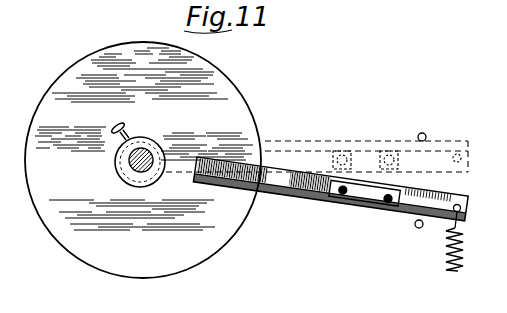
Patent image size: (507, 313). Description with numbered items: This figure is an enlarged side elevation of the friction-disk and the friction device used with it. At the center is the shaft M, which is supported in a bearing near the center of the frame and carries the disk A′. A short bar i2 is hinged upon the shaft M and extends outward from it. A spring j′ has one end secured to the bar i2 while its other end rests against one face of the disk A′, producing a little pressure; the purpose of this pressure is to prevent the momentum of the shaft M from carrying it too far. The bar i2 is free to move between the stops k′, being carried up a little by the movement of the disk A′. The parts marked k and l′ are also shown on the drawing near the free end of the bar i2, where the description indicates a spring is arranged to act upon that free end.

The disk A′ is at (143, 160).
The shaft M is at (136, 163).
The spring j′ is at (282, 233).
The pin k is at (415, 226).
The stops k′ is at (420, 133).
The short bar i2 is at (453, 208).
The spring l′ is at (445, 252).